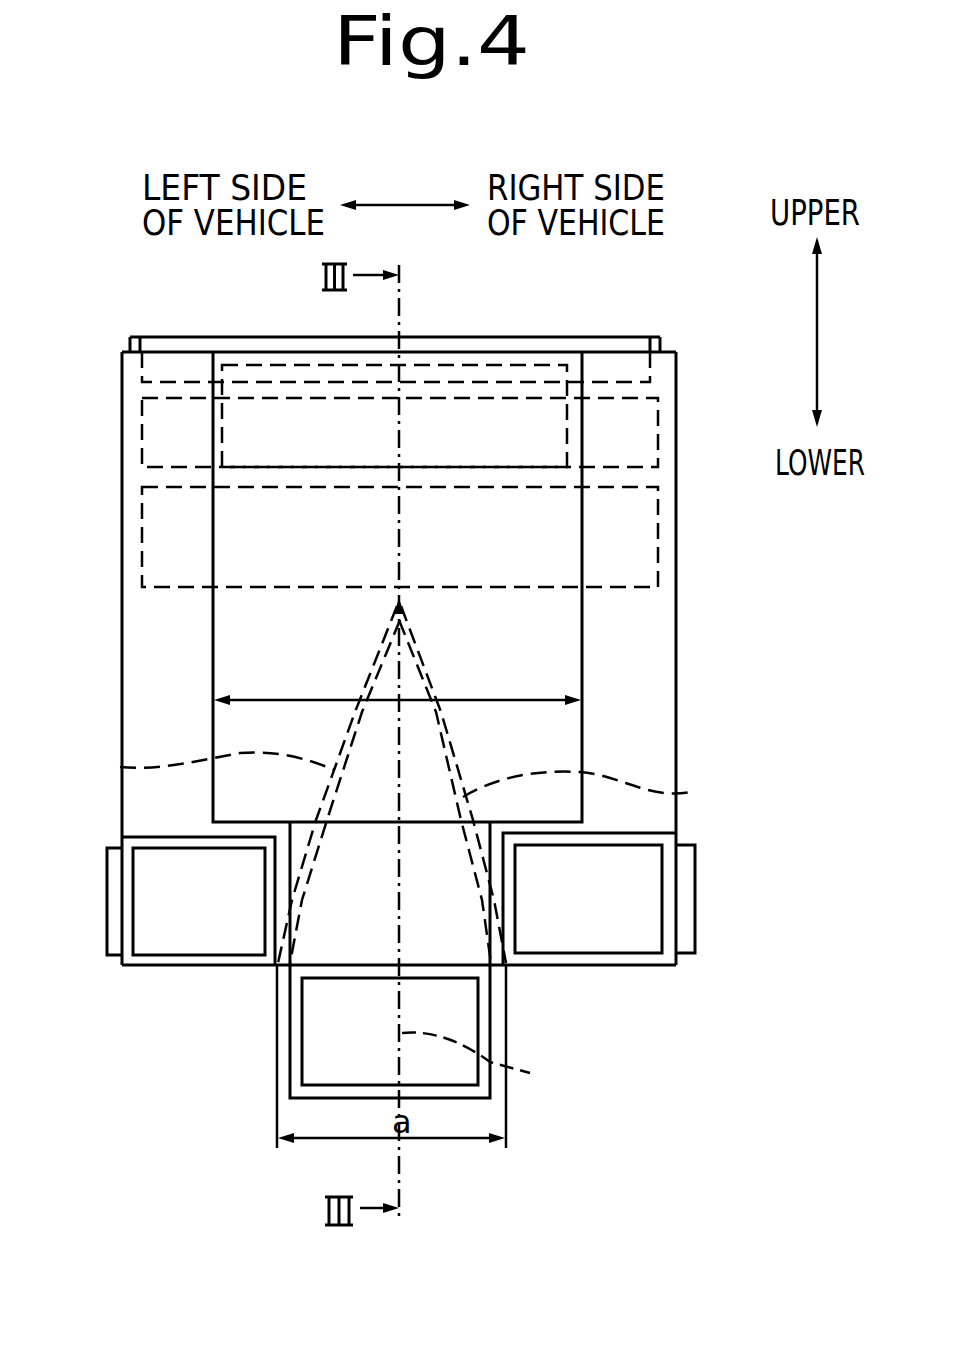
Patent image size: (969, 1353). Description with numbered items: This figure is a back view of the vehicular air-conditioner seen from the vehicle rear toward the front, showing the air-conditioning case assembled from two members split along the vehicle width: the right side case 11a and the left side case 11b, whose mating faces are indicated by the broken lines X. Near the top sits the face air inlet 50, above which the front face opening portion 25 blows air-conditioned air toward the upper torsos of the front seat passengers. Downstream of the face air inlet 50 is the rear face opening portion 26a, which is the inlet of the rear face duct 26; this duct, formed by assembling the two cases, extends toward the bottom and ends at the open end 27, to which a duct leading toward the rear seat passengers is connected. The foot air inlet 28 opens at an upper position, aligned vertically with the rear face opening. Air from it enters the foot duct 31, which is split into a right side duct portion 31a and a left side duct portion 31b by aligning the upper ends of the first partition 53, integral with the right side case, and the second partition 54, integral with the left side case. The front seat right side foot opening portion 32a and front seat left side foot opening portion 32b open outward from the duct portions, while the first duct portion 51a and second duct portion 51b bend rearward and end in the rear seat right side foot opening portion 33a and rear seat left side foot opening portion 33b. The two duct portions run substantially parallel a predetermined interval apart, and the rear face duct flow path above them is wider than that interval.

The right side case 11a is at (696, 638).
The left side case 11b is at (104, 406).
The front face opening portion 25 is at (166, 350).
The rear face duct 26 is at (584, 710).
The rear face opening portion 26a is at (477, 420).
The open end 27 is at (317, 1053).
The foot air inlet 28 is at (630, 543).
The foot duct 31 is at (418, 555).
The right side duct portion 31a is at (653, 737).
The left side duct portion 31b is at (138, 647).
The front seat right side foot opening portion 32a is at (695, 907).
The front seat left side foot opening portion 32b is at (107, 907).
The rear seat right side foot opening portion 33a is at (628, 925).
The rear seat left side foot opening portion 33b is at (183, 925).
The face air inlet 50 is at (625, 427).
The first duct portion 51a is at (560, 968).
The second duct portion 51b is at (228, 968).
The first partition 53 is at (690, 792).
The second partition 54 is at (120, 767).
The mating faces X is at (482, 1065).